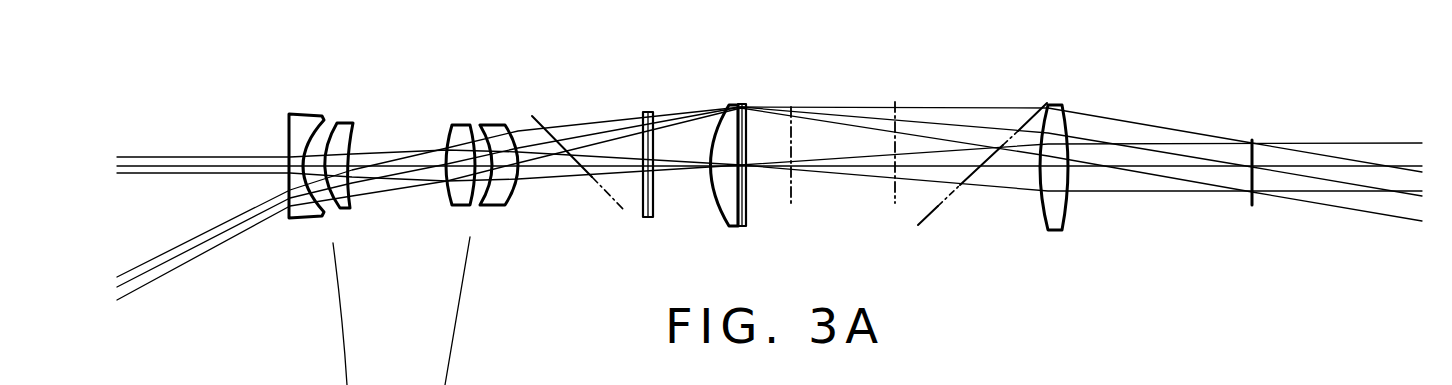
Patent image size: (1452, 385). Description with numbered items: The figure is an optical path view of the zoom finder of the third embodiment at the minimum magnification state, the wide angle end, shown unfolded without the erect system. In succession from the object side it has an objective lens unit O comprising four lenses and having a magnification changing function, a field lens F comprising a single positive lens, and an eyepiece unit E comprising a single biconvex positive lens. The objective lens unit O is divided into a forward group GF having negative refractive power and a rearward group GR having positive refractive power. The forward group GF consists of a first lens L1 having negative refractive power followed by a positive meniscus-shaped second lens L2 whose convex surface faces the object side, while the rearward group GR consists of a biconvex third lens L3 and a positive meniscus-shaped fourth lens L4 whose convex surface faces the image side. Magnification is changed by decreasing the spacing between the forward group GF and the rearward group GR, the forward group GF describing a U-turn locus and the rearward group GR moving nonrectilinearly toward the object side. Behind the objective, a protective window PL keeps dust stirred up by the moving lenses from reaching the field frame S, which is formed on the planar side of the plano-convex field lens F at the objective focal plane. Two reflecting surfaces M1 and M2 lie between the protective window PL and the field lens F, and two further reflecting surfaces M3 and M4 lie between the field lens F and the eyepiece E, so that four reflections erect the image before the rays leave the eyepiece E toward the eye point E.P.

The objective lens unit O is at (488, 55).
The forward group GF is at (357, 101).
The rearward group GR is at (503, 101).
The first lens L1 is at (300, 220).
The second lens L2 is at (348, 212).
The third lens L3 is at (459, 208).
The fourth lens L4 is at (494, 208).
The reflecting surface M1 is at (616, 203).
The protective window PL is at (648, 111).
The field lens F is at (733, 105).
The field frame S is at (745, 105).
The reflecting surface M2 is at (792, 204).
The reflecting surface M3 is at (895, 201).
The reflecting surface M4 is at (941, 205).
The eyepiece unit E is at (1057, 104).
The eye point E.P. is at (1252, 139).